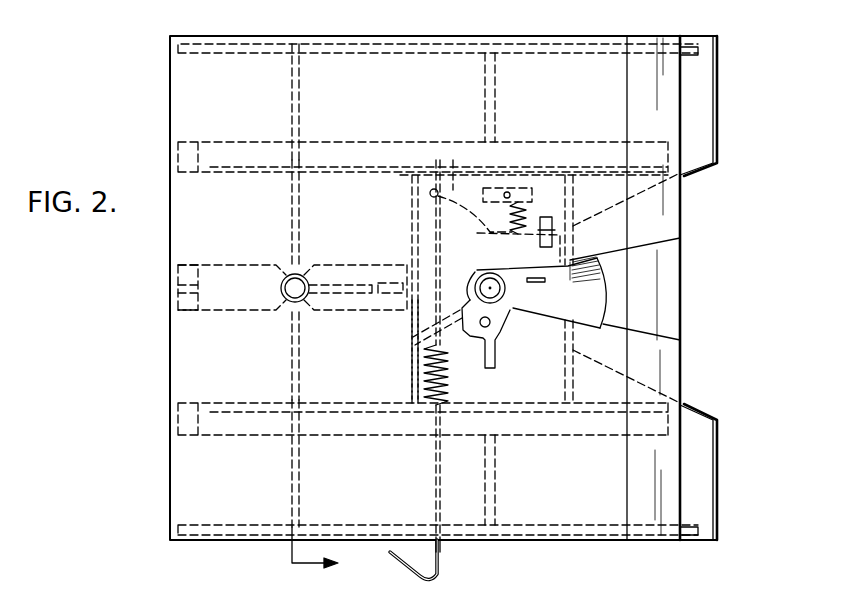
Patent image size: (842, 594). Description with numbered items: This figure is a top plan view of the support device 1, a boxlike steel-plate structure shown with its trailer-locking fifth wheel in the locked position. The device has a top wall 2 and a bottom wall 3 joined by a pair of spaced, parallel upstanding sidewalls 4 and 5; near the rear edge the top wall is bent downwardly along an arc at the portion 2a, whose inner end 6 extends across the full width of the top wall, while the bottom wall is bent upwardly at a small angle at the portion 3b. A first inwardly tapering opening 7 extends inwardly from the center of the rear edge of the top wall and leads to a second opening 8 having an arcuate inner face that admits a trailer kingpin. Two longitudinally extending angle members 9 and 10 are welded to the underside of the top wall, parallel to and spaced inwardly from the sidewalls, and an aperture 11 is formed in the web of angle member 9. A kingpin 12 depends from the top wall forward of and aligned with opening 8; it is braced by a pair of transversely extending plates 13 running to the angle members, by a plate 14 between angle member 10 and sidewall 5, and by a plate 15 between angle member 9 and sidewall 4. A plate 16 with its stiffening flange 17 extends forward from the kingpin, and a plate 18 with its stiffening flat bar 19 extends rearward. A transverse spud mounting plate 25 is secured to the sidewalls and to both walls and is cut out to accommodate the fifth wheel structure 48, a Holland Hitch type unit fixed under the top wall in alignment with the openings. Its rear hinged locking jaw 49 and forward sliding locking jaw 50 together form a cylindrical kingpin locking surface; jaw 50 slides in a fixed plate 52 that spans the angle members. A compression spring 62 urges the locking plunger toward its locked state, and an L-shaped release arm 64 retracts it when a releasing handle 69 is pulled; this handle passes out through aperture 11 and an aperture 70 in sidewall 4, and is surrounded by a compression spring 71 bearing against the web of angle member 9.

The support device 1 is at (172, 58).
The top wall 2 is at (366, 349).
The arcuately bent portion of top wall 2a is at (762, 185).
The bottom wall 3 is at (602, 215).
The upwardly bent portion of bottom wall 3b is at (703, 92).
The sidewall 4 is at (606, 540).
The sidewall 5 is at (466, 42).
The inner end of bent portion 6 is at (625, 90).
The first inwardly tapering opening 7 is at (618, 336).
The second opening 8 is at (525, 306).
The angle member 9 is at (392, 403).
The angle member 10 is at (246, 172).
The aperture 11 is at (440, 414).
The device transporting pin member (kingpin) 12 is at (286, 274).
The transversely extending plates 13 is at (290, 206).
The transversely extending plate 14 is at (290, 90).
The transversely extending plate 15 is at (290, 475).
The plate 16 is at (203, 266).
The stiffening flange 17 is at (246, 312).
The plate 18 is at (336, 282).
The flat bar 19 is at (379, 280).
The spud mounting plate 25 is at (484, 95).
The fifth wheel structure 48 is at (604, 269).
The rear locking jaw 49 is at (507, 300).
The forward locking jaw 50 is at (478, 278).
The fixed plate 52 is at (412, 346).
The compression spring 62 is at (528, 215).
The L-shaped release arm 64 is at (455, 178).
The releasing handle 69 is at (392, 560).
The aperture 70 is at (445, 546).
The compression spring 71 is at (450, 379).